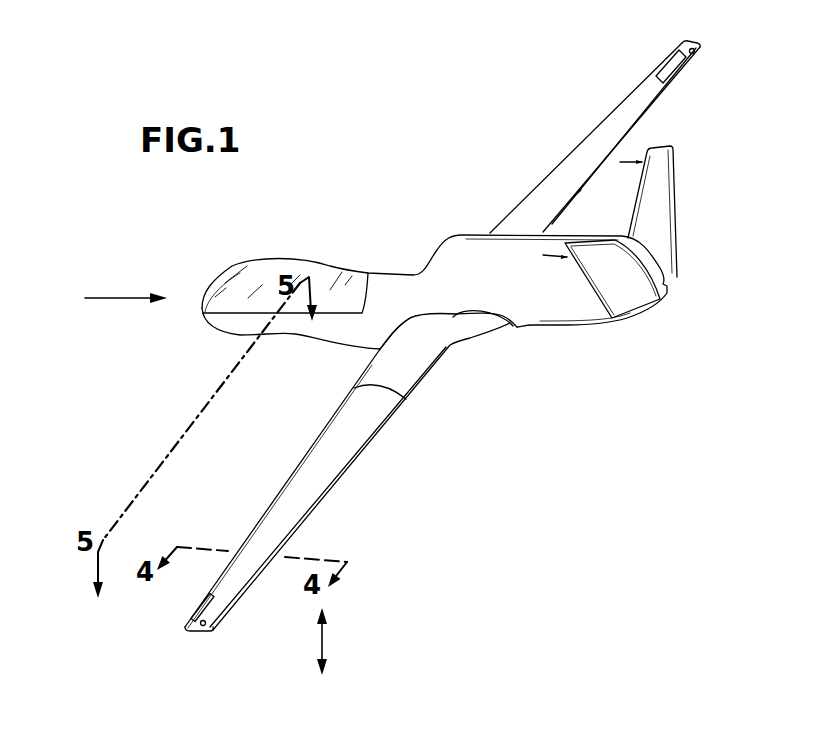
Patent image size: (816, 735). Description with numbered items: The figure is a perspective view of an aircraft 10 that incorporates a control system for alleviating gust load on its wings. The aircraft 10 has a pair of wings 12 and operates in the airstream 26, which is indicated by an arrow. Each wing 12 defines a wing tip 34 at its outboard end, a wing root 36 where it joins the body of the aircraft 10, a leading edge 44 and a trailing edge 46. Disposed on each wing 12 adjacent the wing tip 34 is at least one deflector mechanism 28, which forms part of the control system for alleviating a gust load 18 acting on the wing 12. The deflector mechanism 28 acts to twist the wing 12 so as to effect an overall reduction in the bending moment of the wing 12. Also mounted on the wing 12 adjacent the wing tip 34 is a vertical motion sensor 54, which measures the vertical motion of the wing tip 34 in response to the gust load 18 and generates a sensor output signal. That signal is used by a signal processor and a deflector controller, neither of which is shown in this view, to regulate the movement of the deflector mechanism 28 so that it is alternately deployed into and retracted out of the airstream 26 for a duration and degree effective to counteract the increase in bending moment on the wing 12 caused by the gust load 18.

The aircraft 10 is at (509, 507).
The wing 12 is at (560, 177).
The gust load 18 is at (325, 640).
The airstream 26 is at (120, 302).
The deflector mechanism 28 is at (200, 607).
The wing tip 34 is at (192, 630).
The wing root 36 is at (488, 316).
The leading edge 44 is at (318, 500).
The trailing edge 46 is at (413, 382).
The vertical motion sensor 54 is at (203, 627).